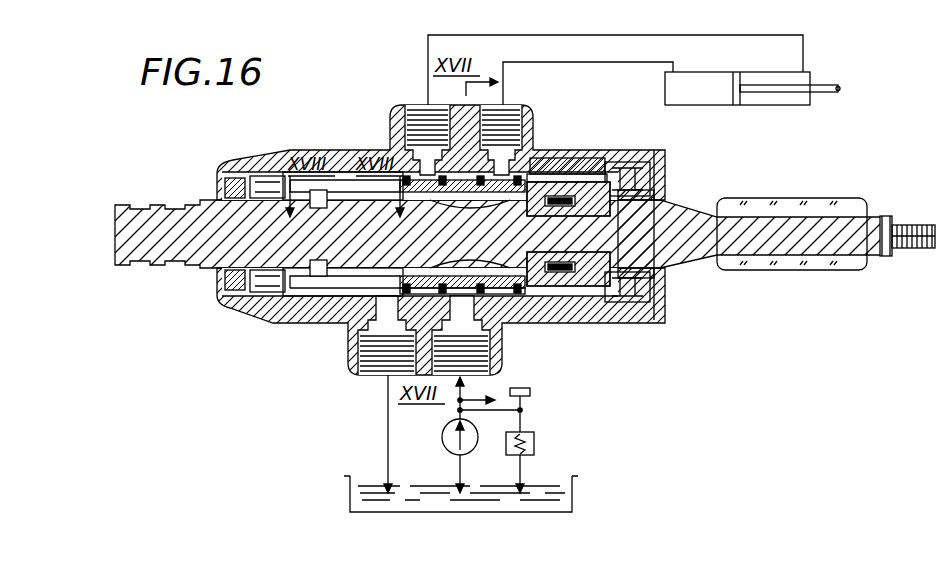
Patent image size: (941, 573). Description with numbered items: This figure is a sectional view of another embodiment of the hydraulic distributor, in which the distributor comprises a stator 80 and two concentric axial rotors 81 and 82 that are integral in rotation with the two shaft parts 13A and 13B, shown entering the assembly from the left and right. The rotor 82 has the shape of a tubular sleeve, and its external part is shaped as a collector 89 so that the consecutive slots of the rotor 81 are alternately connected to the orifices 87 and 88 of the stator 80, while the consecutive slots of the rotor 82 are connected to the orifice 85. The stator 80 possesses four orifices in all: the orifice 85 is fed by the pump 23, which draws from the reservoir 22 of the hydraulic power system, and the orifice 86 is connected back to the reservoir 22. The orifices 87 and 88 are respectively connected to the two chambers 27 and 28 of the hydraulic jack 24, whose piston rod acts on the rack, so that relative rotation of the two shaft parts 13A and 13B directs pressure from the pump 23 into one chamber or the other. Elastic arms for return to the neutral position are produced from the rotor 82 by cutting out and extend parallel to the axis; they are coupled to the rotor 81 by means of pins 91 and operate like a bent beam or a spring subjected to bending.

The part 13A is at (170, 205).
The part 13B is at (697, 200).
The reservoir 22 is at (575, 492).
The pump 23 is at (442, 437).
The hydraulic jack 24 is at (766, 93).
The chamber 27 is at (712, 96).
The chamber 28 is at (786, 100).
The stator 80 is at (536, 170).
The rotor 81 is at (542, 220).
The rotor 82 is at (590, 172).
The orifice 85 is at (486, 358).
The orifice 86 is at (362, 358).
The orifice 87 is at (416, 122).
The orifice 88 is at (505, 125).
The collector 89 is at (482, 291).
The pins 91 is at (318, 262).